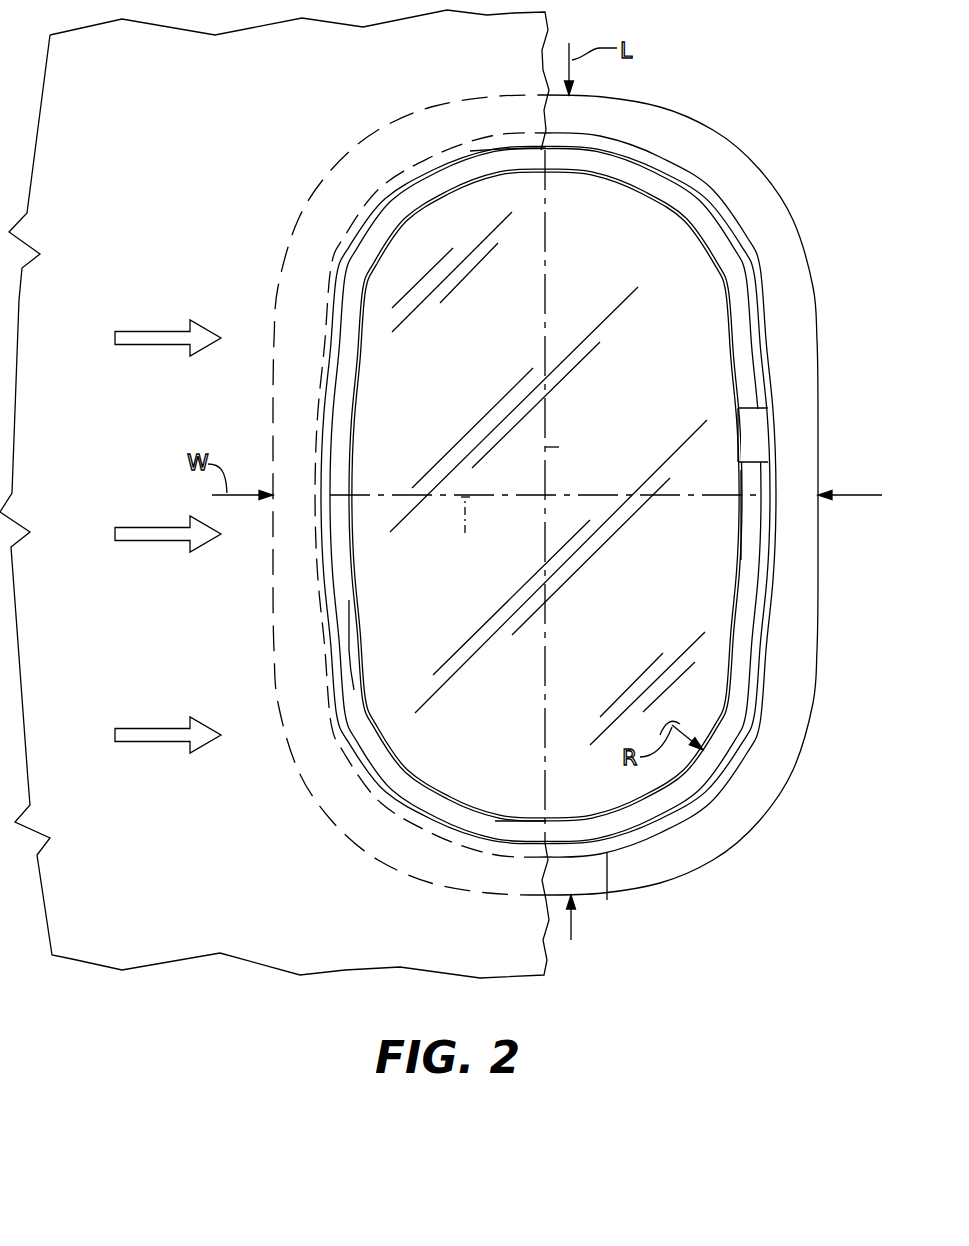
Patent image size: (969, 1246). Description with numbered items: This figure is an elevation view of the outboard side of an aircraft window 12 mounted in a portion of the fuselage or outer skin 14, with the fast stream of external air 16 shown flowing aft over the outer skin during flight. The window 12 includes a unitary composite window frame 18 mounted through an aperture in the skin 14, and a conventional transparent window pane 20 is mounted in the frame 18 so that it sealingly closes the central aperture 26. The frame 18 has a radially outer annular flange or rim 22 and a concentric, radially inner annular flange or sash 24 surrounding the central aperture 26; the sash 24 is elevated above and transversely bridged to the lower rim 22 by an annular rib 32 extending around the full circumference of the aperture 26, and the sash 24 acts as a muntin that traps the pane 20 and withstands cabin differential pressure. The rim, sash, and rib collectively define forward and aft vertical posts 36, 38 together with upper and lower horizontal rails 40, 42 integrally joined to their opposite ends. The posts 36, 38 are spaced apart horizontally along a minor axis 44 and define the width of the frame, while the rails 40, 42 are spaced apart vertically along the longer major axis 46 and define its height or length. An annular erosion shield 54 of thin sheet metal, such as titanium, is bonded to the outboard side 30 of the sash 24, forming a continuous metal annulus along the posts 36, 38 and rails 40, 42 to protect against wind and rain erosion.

The window 12 is at (542, 507).
The fuselage or outer skin 14 is at (177, 904).
The external air 16 is at (152, 552).
The unitary composite window frame 18 is at (713, 130).
The transparent window pane 20 is at (626, 393).
The radially outer annular flange or rim 22 is at (648, 871).
The radially inner annular flange or sash 24 is at (755, 436).
The central aperture 26 is at (404, 779).
The outboard side 30 is at (740, 802).
The annular rib 32 is at (608, 900).
The forward vertical column or post 36 is at (338, 467).
The aft vertical column or post 38 is at (745, 512).
The upper horizontal rail 40 is at (502, 152).
The lower horizontal rail 42 is at (522, 821).
The minor axis 44 is at (465, 533).
The major axis 46 is at (562, 442).
The annular erosion shield 54 is at (350, 670).